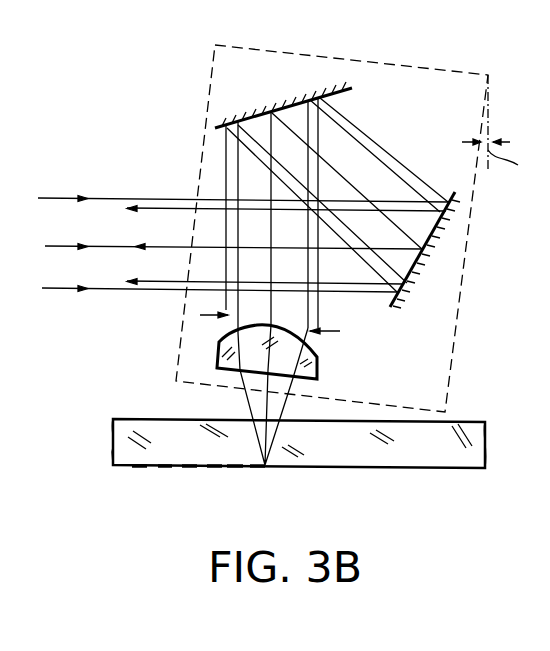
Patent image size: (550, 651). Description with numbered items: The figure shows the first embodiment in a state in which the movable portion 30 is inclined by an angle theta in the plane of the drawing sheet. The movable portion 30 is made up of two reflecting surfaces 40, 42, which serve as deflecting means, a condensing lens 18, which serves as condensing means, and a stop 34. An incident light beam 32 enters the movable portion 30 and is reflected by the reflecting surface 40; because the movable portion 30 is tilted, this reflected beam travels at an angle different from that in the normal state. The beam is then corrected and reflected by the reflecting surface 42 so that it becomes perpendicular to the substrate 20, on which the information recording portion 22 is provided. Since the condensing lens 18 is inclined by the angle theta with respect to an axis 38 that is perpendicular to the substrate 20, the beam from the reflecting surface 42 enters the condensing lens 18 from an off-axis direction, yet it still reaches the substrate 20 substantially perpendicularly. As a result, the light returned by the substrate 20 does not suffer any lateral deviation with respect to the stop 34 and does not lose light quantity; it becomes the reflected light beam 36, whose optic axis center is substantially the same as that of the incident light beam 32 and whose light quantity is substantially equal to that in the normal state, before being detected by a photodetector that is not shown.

The condensing lens 18 is at (320, 368).
The substrate 20 is at (465, 430).
The information recording portion 22 is at (190, 468).
The movable portion 30 is at (437, 71).
The incident light beam 32 is at (72, 195).
The stop 34 is at (337, 334).
The reflected light beam 36 is at (168, 207).
The axis 38 is at (262, 407).
The reflecting surface 40 is at (420, 263).
The reflecting surface 42 is at (250, 110).